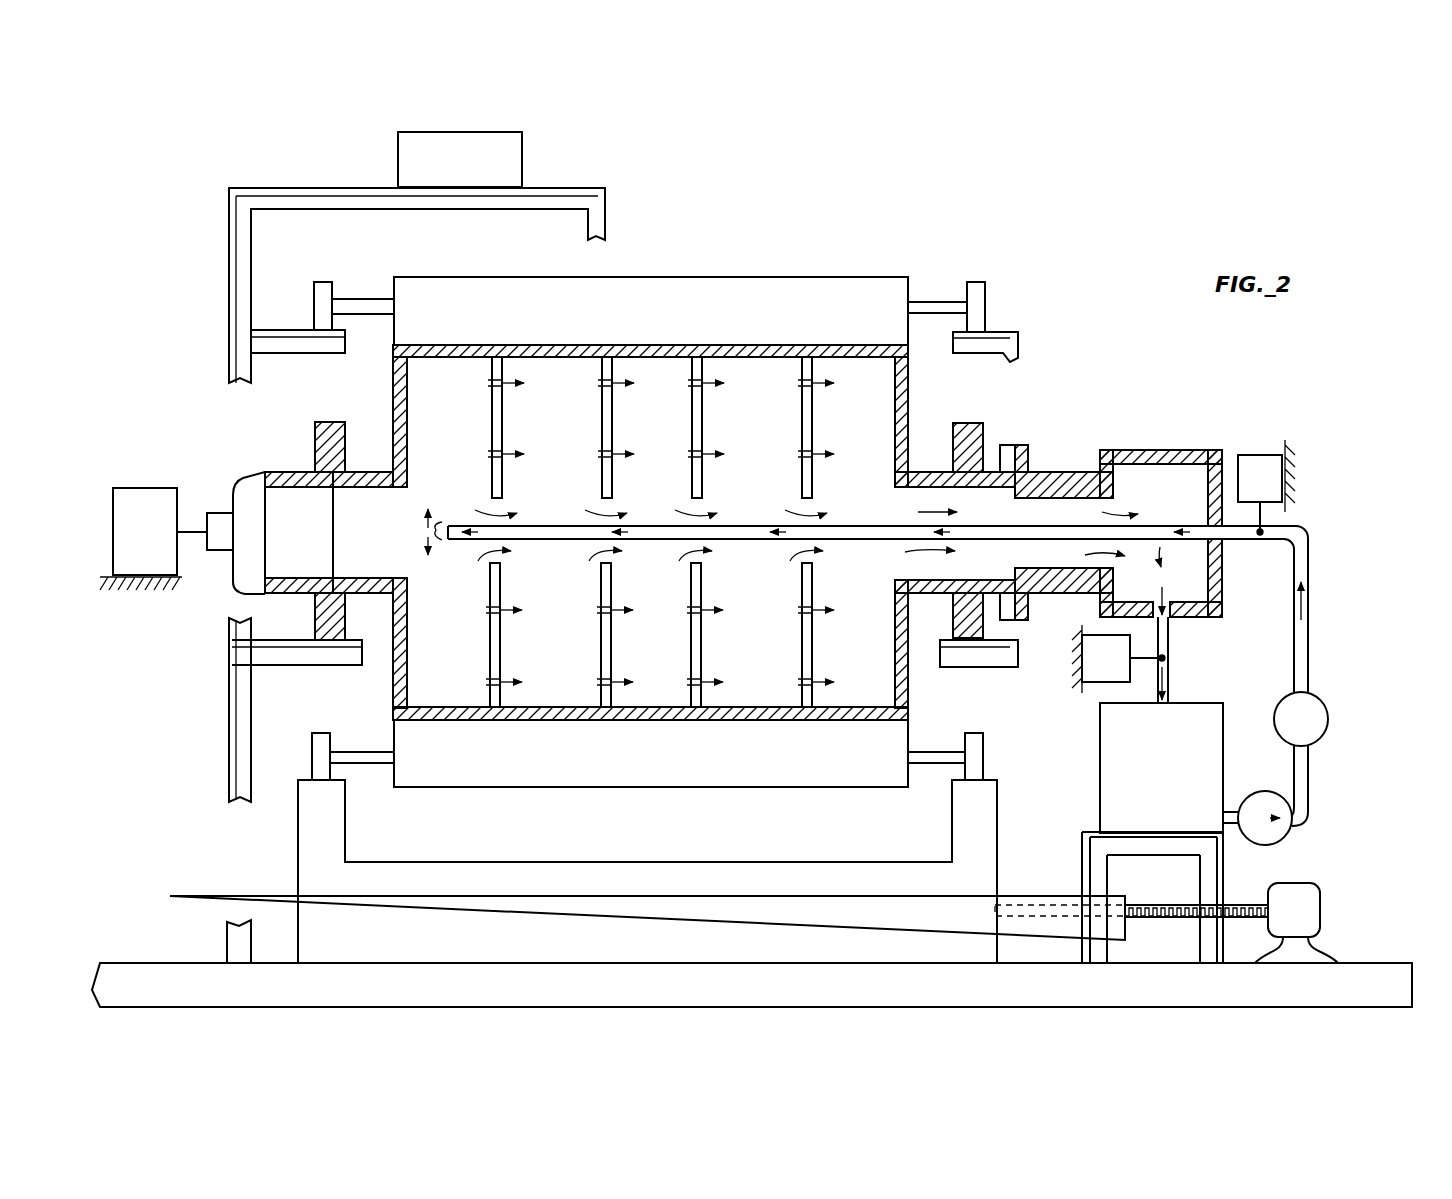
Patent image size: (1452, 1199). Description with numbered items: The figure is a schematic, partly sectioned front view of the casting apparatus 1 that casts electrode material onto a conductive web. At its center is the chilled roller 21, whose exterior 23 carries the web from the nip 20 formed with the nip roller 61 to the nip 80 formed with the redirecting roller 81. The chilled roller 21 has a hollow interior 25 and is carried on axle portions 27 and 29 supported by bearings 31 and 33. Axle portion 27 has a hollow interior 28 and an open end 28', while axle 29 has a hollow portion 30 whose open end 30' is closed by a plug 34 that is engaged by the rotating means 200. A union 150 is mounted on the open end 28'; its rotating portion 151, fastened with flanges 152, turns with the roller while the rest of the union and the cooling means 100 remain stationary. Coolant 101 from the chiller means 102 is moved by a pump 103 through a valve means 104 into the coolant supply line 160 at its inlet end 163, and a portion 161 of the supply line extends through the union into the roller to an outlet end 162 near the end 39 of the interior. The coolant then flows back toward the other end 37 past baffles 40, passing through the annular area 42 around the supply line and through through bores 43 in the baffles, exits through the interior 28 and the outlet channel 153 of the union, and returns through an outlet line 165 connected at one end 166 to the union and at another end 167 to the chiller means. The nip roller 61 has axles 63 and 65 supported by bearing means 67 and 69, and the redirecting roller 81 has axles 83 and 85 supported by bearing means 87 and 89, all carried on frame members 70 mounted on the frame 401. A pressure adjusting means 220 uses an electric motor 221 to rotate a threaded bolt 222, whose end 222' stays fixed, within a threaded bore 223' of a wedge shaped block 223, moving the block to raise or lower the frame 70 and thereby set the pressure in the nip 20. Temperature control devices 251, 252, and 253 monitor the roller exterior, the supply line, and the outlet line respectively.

The casting apparatus 1 is at (1096, 260).
The nip 20 is at (557, 722).
The chilled roller 21 is at (912, 388).
The exterior 23 is at (437, 343).
The hollow interior 25 is at (548, 368).
The axle portion 27 is at (923, 467).
The hollow interior 28 is at (975, 644).
The open end 28' is at (1039, 426).
The axle portion 29 is at (273, 470).
The hollow portion 30 is at (329, 446).
The open end 30' is at (288, 588).
The bearing 31 is at (970, 423).
The bearing 33 is at (328, 422).
The plug 34 is at (238, 483).
The end of interior 37 is at (893, 687).
The end of interior 39 is at (410, 650).
The baffles 40 is at (503, 435).
The annular area 42 is at (483, 565).
The through bores 43 is at (688, 457).
The nip roller 61 is at (783, 792).
The axle 63 is at (917, 752).
The axle 65 is at (377, 752).
The bearing means 67 is at (987, 752).
The bearing means 69 is at (313, 752).
The frame member 70 is at (298, 867).
The nip 80 is at (704, 397).
The redirecting roller 81 is at (797, 272).
The axle 83 is at (918, 298).
The axle 85 is at (382, 297).
The bearing means 87 is at (978, 283).
The bearing means 89 is at (322, 282).
The cooling means 100 is at (1352, 663).
The coolant 101 is at (777, 530).
The chiller means 102 is at (1161, 768).
The pump 103 is at (1292, 830).
The valve means 104 is at (1328, 712).
The union 150 is at (1183, 498).
The rotating portion 151 is at (1053, 457).
The flanges 152 is at (1038, 463).
The outlet channel 153 is at (1135, 480).
The coolant supply line 160 is at (1310, 608).
The portion of coolant supply line 161 is at (837, 523).
The outlet end 162 is at (437, 517).
The inlet end 163 is at (1230, 830).
The outlet line 165 is at (1175, 670).
The end 166 is at (1173, 617).
The end 167 is at (1172, 697).
The rotating means 200 is at (166, 539).
The pressure adjusting means 220 is at (1355, 893).
The electric motor 221 is at (1322, 918).
The threaded bolt 222 is at (1175, 918).
The end of bolt 222' is at (1090, 961).
The wedge shaped block 223 is at (647, 950).
The interior threaded bore 223' is at (1060, 878).
The chilled roller exterior temperature control device 251 is at (460, 159).
The coolant supply line temperature control device 252 is at (1250, 450).
The outlet line temperature control device 253 is at (1092, 688).
The frame 401 is at (227, 275).